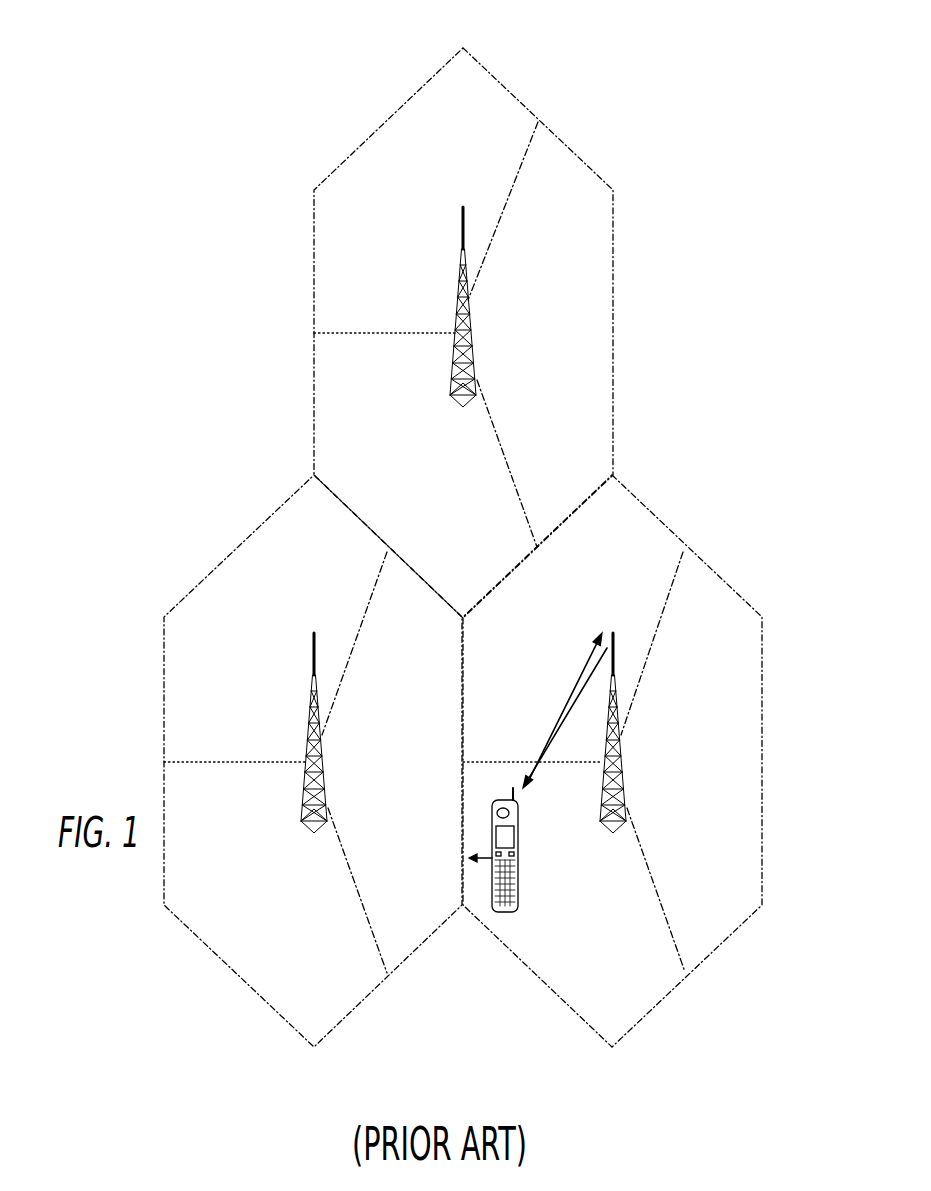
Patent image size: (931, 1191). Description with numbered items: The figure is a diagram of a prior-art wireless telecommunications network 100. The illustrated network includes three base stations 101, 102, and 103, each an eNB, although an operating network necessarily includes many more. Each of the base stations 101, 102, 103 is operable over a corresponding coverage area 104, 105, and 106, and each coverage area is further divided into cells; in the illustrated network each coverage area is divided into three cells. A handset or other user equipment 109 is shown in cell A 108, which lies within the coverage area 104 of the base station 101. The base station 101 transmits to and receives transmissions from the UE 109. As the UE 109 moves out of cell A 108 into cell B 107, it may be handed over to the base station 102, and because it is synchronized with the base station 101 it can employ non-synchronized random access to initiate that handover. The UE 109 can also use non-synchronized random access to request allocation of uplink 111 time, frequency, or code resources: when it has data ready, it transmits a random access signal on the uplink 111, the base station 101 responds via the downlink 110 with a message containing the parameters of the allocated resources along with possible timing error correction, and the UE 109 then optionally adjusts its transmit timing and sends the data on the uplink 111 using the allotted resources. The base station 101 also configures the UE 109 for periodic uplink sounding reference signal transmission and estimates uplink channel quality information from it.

The wireless telecommunications network 100 is at (579, 75).
The base station 101 is at (622, 776).
The base station 102 is at (312, 712).
The base station 103 is at (460, 283).
The coverage area 104 is at (698, 966).
The coverage area 105 is at (227, 968).
The coverage area 106 is at (613, 303).
The Cell B 107 is at (430, 902).
The Cell A 108 is at (618, 987).
The user equipment 109 is at (519, 868).
The downlink 110 is at (547, 758).
The uplink 111 is at (568, 681).